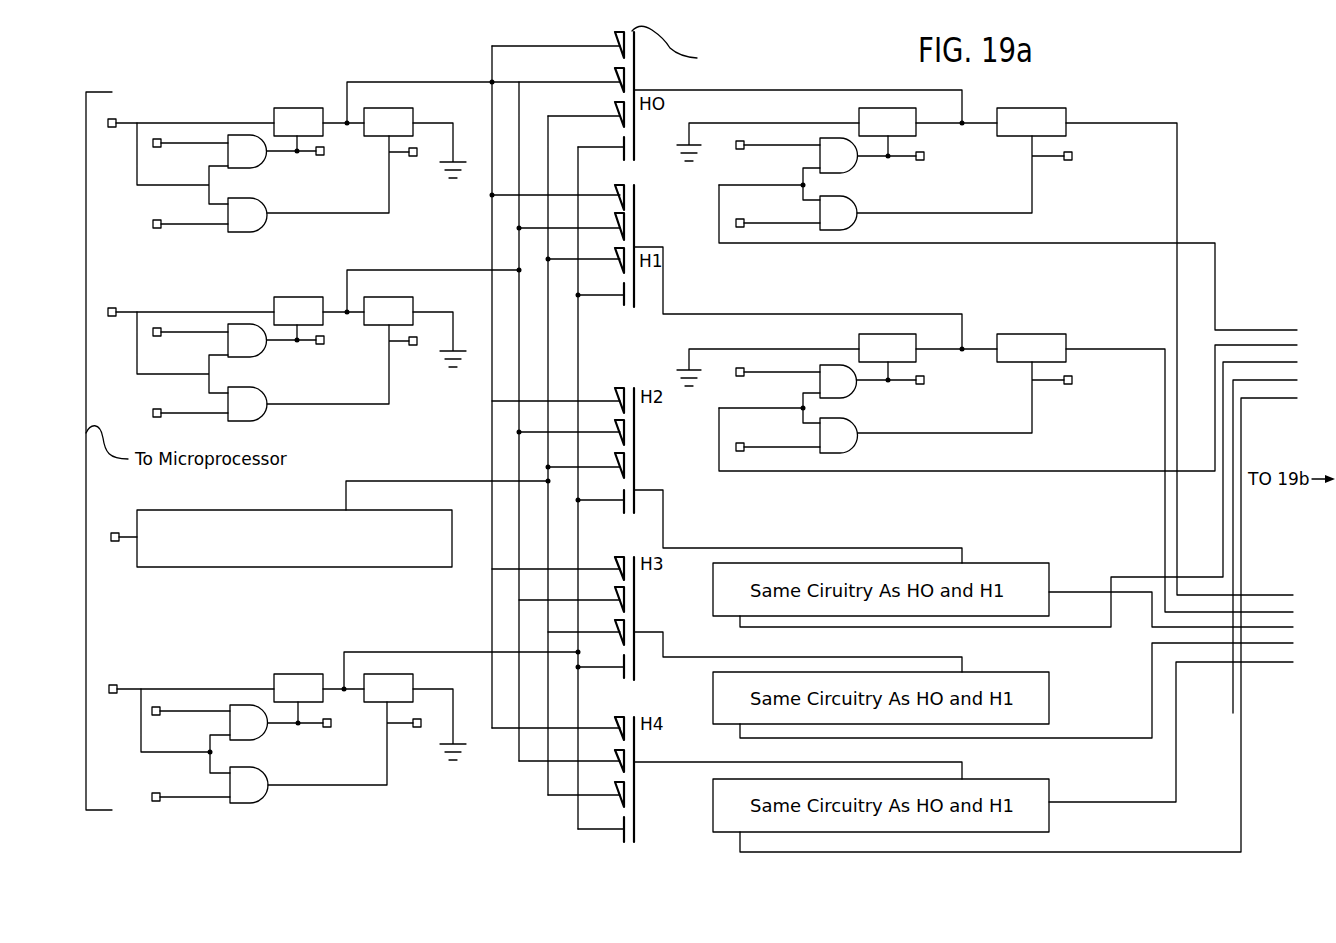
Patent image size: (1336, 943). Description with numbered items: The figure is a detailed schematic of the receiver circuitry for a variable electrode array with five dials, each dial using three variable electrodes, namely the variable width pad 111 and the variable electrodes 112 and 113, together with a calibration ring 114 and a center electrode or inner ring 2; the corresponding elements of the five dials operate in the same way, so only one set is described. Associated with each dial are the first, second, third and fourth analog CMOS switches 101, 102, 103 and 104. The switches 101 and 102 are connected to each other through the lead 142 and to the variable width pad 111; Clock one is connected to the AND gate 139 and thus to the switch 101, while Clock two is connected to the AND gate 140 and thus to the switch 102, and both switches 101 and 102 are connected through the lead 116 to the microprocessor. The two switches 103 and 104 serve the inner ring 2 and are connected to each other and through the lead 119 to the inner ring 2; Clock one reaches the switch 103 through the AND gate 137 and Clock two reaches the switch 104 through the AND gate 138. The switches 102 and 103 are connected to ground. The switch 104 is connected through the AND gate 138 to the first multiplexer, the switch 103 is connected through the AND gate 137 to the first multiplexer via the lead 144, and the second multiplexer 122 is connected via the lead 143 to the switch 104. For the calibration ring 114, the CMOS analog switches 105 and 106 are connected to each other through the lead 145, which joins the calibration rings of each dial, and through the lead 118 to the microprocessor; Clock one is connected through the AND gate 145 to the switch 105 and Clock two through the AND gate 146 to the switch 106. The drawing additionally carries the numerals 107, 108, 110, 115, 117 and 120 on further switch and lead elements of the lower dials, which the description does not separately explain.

The inner ring 2 is at (637, 51).
The first analog CMOS switch 101 is at (286, 133).
The second analog CMOS switch 102 is at (376, 133).
The third analog CMOS switch 103 is at (875, 133).
The fourth analog CMOS switch 104 is at (1019, 133).
The CMOS analog switch 105 is at (286, 699).
The CMOS analog switch 106 is at (376, 699).
The latch 107 is at (286, 322).
The latch 108 is at (376, 322).
The latch 110 is at (1019, 359).
The variable width pad 111 is at (614, 39).
The variable electrode 112 is at (613, 75).
The variable electrode 113 is at (613, 108).
The calibration ring 114 is at (620, 139).
The bus lines 115 is at (578, 169).
The lead 116 is at (229, 118).
The input circuit 117 is at (229, 307).
The lead 118 is at (220, 690).
The lead 119 is at (883, 91).
The output circuit 120 is at (778, 312).
The second multiplexer 122 is at (114, 530).
The AND gate 137 is at (872, 154).
The AND gate 138 is at (946, 183).
The AND gate 139 is at (276, 151).
The AND gate 140 is at (322, 184).
The lead 142 is at (415, 81).
The lead 143 is at (1176, 186).
The lead 144 is at (1101, 242).
The lead 145 is at (280, 721).
The AND gate 146 is at (325, 752).